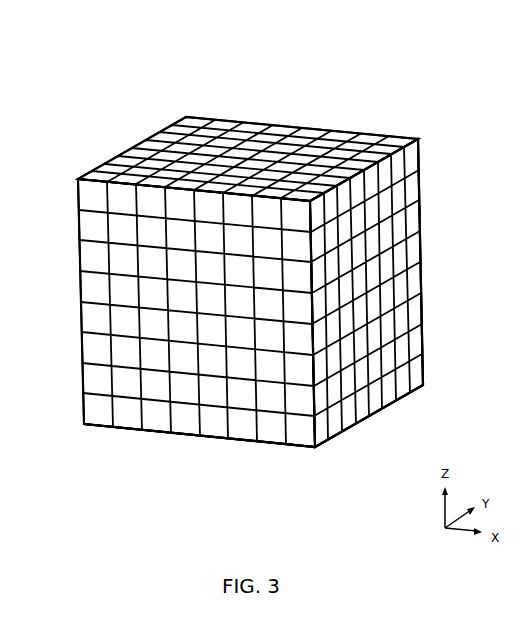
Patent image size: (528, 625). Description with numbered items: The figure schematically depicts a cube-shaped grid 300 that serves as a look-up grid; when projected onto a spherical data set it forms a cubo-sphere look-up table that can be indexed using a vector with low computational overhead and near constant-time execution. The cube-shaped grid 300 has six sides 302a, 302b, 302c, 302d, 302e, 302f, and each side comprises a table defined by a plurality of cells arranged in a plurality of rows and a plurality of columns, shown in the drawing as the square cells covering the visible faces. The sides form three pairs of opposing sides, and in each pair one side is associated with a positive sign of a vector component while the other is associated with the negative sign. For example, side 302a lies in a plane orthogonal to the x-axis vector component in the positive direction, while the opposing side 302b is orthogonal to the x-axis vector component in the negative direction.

The cube-shaped grid 300 is at (260, 270).
The side 302a is at (415, 308).
The side 302b is at (80, 290).
The side 302c is at (292, 125).
The side 302d is at (130, 428).
The side 302e is at (217, 430).
The side 302f is at (420, 213).